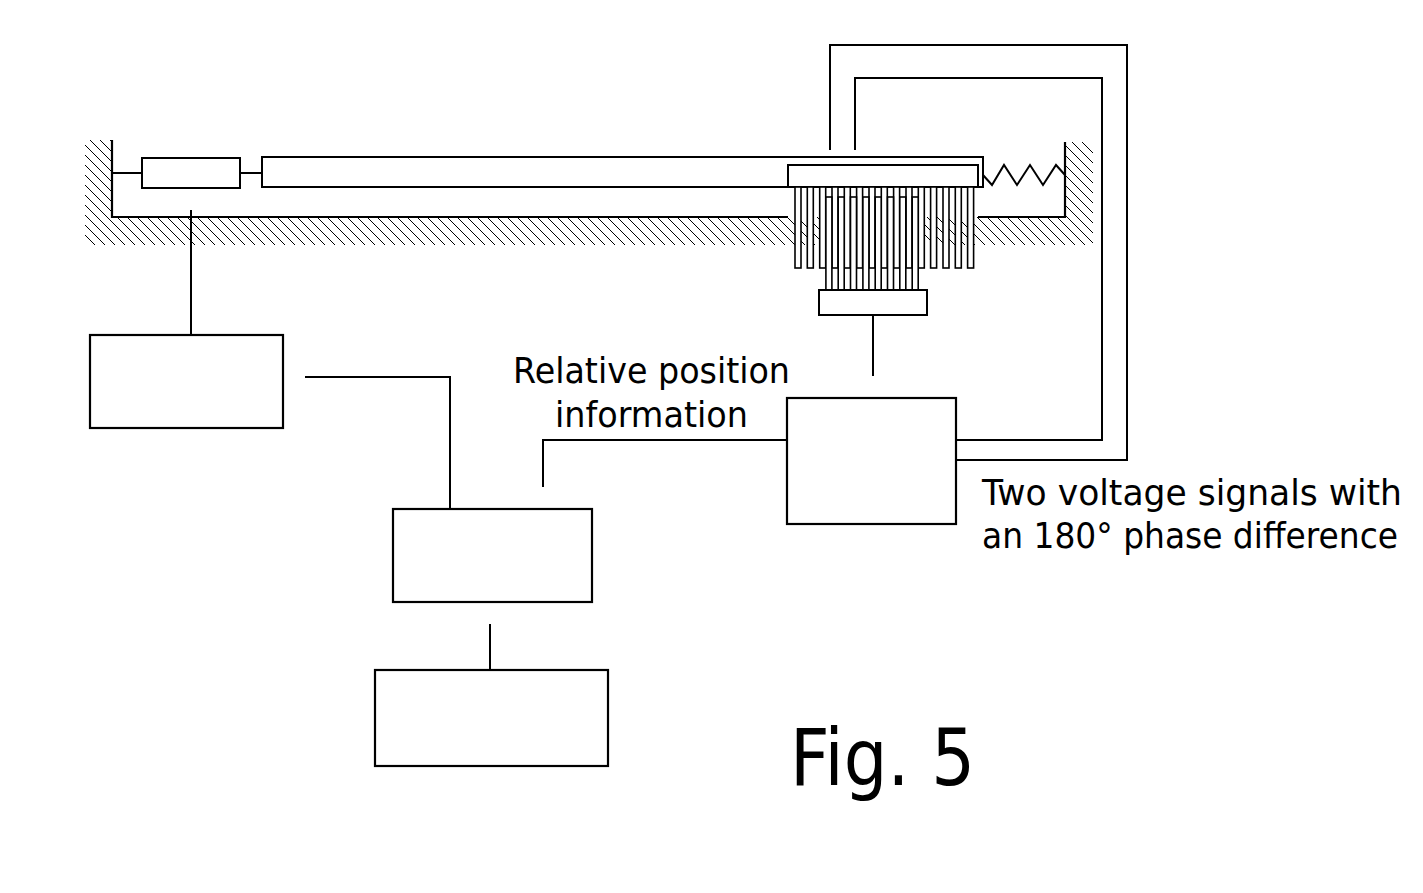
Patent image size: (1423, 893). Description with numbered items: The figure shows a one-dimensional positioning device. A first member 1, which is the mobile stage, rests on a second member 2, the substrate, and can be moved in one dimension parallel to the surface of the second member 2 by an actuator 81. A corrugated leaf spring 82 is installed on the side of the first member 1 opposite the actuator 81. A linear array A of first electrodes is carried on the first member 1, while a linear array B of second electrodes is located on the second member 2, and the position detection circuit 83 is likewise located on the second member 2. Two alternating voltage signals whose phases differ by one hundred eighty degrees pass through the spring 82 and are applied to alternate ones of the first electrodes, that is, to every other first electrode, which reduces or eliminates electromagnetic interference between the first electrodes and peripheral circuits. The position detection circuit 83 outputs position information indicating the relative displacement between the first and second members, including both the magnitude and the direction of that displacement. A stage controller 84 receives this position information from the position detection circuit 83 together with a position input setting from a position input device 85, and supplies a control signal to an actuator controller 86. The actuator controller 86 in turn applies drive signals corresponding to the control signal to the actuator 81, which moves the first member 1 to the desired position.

The first member 1 is at (370, 158).
The second member 2 is at (140, 216).
The actuator 81 is at (185, 158).
The corrugated leaf spring 82 is at (1003, 170).
The position detection circuit 83 is at (847, 524).
The stage controller 84 is at (592, 562).
The position input device 85 is at (608, 735).
The actuator controller 86 is at (183, 429).
The linear array of first electrodes A is at (775, 270).
The linear array of second electrodes B is at (945, 303).